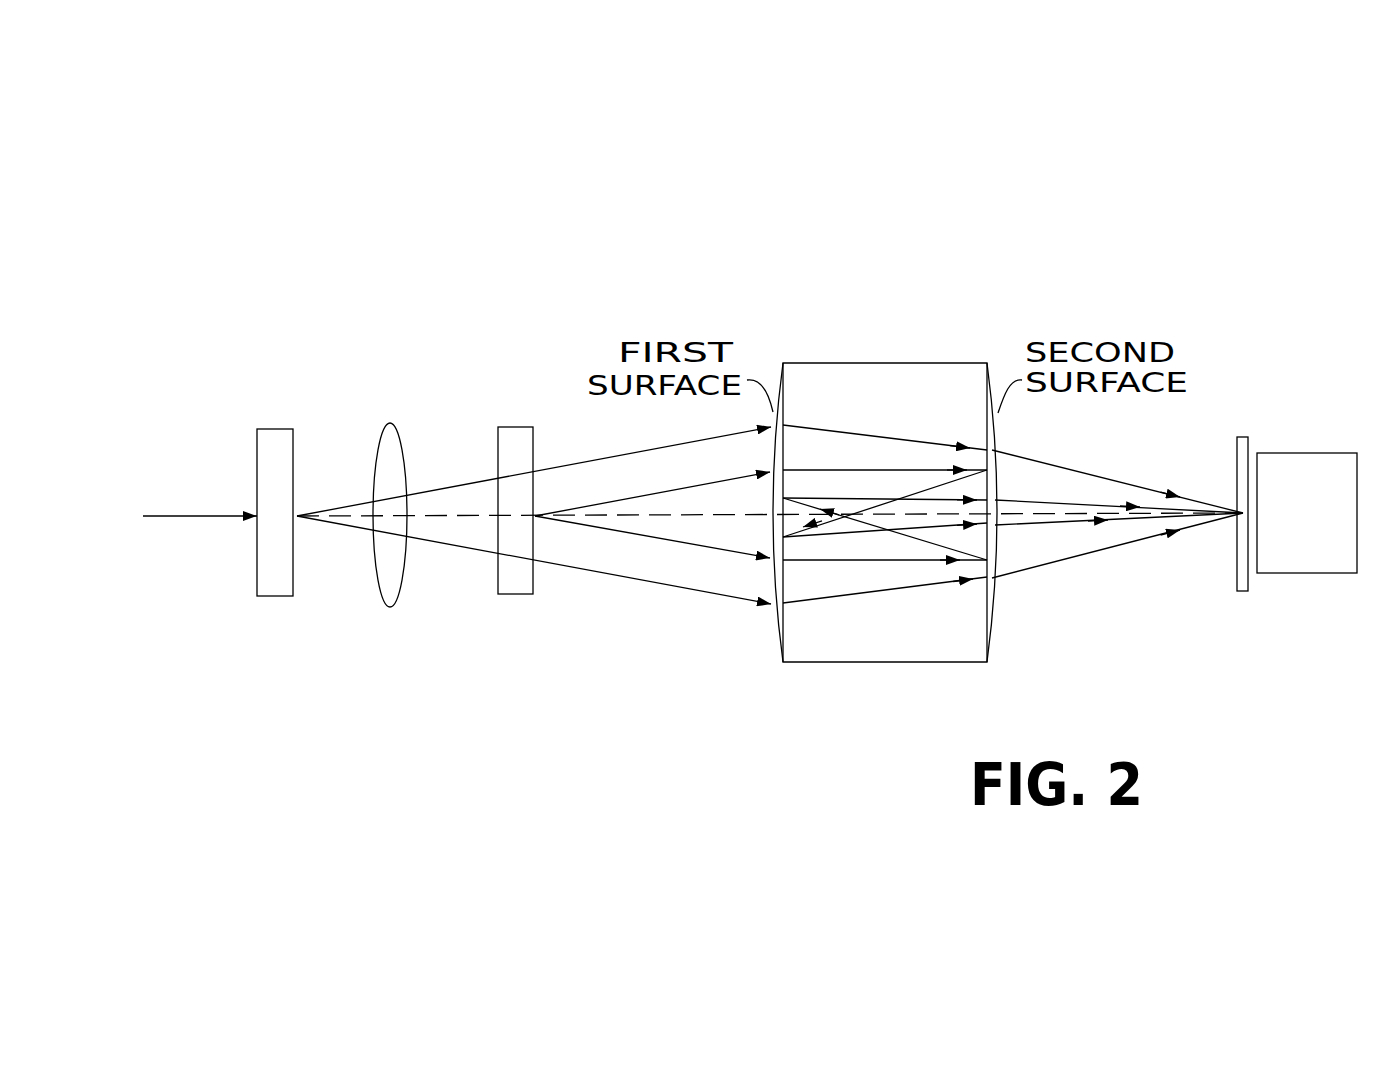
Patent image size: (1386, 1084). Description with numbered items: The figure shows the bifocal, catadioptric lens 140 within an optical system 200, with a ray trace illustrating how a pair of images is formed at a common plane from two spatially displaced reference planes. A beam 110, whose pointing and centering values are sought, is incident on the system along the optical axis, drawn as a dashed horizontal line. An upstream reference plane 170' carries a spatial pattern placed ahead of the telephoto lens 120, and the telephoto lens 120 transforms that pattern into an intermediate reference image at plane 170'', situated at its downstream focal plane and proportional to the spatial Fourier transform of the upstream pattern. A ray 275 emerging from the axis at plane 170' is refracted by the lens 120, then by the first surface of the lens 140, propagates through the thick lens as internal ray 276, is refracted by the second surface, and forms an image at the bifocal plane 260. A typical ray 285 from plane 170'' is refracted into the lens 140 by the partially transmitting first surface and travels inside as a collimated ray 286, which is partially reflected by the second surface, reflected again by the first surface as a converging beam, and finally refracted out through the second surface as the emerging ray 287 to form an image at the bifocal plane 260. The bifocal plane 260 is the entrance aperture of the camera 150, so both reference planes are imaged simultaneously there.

The optical system 200 is at (1104, 249).
The beam 110 is at (198, 513).
The upstream reference plane 170' is at (273, 474).
The telephoto lens 120 is at (397, 423).
The intermediate reference plane 170'' is at (528, 473).
The ray 275 is at (455, 548).
The ray 285 is at (640, 537).
The bifocal lens 140 is at (892, 362).
The internal collimated ray 286 is at (852, 561).
The internal ray 276 is at (912, 590).
The ray 287 is at (1063, 528).
The bifocal plane 260 is at (1247, 438).
The camera 150 is at (1338, 516).